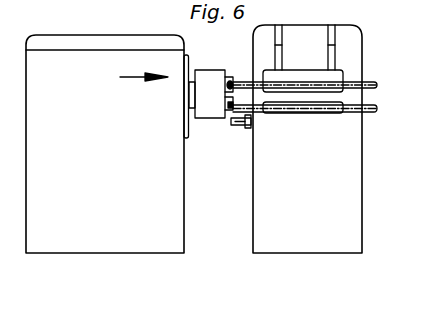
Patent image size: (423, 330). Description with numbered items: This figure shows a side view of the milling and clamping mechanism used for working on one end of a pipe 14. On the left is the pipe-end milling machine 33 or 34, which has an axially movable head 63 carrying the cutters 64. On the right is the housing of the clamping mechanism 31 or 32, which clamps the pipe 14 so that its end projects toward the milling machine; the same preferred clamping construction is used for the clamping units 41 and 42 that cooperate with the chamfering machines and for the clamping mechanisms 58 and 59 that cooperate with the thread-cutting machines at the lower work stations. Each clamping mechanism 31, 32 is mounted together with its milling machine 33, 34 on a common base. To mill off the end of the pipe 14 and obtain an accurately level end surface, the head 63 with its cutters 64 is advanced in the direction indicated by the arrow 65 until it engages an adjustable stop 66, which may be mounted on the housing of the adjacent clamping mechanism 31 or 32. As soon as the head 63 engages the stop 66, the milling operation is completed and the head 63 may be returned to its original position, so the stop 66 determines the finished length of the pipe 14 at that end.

The pipe 14 is at (350, 109).
The clamping mechanism 31 is at (307, 170).
The clamping mechanism 32 is at (307, 170).
The pipe-end milling machine 33 is at (107, 157).
The pipe-end milling machine 34 is at (110, 237).
The clamping unit 41 is at (307, 170).
The clamping unit 42 is at (307, 170).
The clamping mechanism 58 is at (307, 170).
The clamping mechanism 59 is at (302, 237).
The head 63 is at (206, 113).
The cutters 64 is at (234, 78).
The arrow 65 is at (136, 76).
The adjustable stop 66 is at (236, 127).